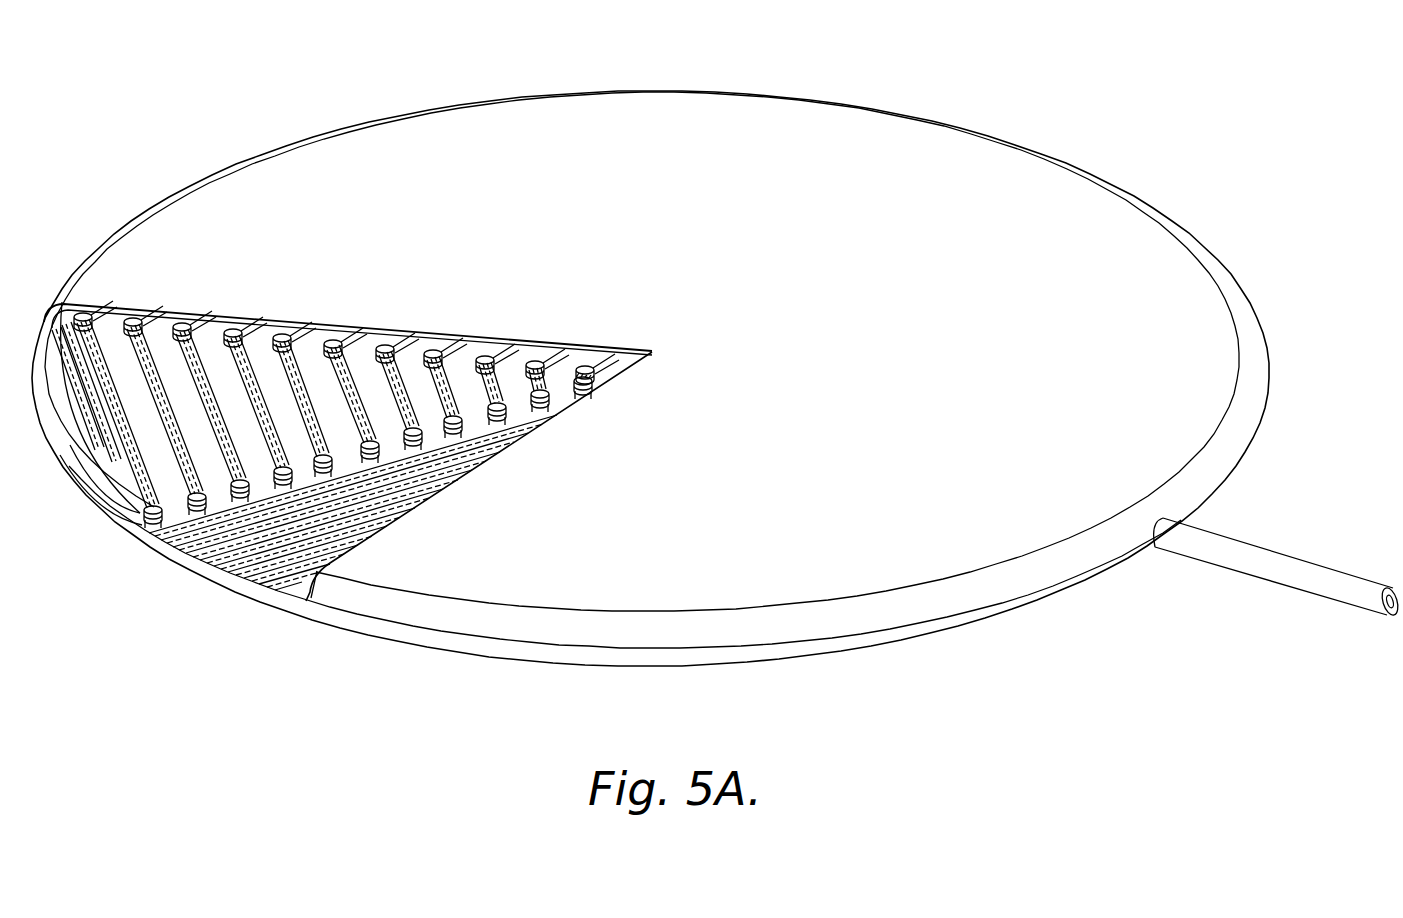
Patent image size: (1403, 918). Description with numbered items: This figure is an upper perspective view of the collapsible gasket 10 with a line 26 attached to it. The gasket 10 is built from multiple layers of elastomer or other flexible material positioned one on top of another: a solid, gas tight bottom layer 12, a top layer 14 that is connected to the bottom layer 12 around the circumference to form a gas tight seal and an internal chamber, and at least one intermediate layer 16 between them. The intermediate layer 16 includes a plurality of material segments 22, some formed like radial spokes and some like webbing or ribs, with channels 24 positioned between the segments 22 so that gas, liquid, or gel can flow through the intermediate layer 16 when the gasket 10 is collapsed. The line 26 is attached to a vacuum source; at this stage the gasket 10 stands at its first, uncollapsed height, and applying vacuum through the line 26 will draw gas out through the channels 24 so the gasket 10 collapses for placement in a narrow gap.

The collapsible gasket 10 is at (918, 80).
The bottom layer 12 is at (220, 578).
The top layer 14 is at (277, 182).
The intermediate layer 16 is at (415, 353).
The material segments 22 is at (294, 363).
The channels 24 is at (84, 350).
The line 26 is at (1295, 578).